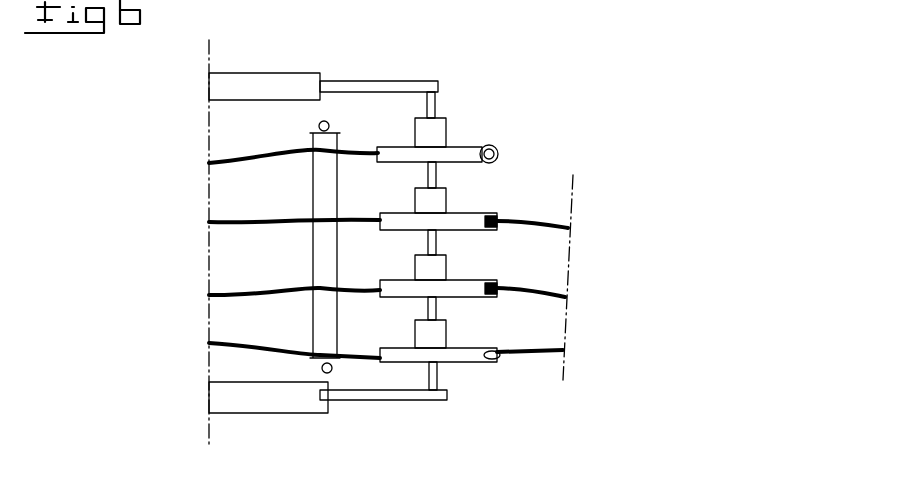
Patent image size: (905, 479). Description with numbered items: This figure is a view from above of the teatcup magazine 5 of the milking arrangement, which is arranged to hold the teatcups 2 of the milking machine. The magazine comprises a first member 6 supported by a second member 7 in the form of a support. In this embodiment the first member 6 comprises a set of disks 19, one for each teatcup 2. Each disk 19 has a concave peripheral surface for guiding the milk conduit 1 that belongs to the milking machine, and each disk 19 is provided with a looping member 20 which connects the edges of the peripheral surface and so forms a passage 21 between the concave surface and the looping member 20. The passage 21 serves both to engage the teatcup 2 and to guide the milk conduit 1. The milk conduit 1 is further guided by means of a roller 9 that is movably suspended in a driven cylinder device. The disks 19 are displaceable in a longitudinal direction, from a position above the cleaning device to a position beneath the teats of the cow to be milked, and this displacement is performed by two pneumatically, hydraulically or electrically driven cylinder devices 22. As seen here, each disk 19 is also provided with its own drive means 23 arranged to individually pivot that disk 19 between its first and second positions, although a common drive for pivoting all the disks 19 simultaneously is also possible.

The milk conduit 1 is at (218, 165).
The teatcup 2 is at (497, 146).
The teatcup magazine 5 is at (595, 116).
The first member 6 is at (457, 217).
The disk 19 is at (470, 145).
The second member 7 is at (358, 91).
The roller 9 is at (318, 191).
The looping member 20 is at (491, 230).
The passage 21 is at (488, 229).
The cylinder device 22 is at (245, 73).
The drive means 23 is at (422, 197).